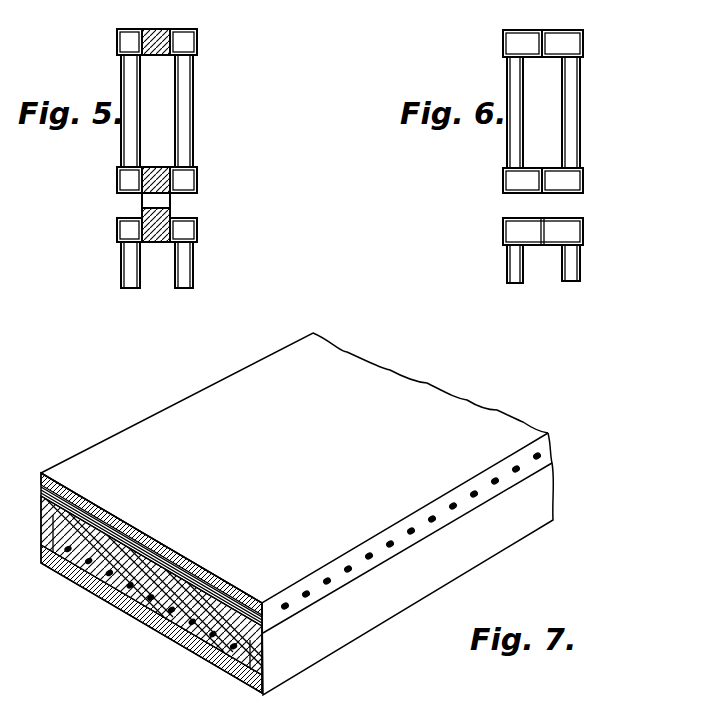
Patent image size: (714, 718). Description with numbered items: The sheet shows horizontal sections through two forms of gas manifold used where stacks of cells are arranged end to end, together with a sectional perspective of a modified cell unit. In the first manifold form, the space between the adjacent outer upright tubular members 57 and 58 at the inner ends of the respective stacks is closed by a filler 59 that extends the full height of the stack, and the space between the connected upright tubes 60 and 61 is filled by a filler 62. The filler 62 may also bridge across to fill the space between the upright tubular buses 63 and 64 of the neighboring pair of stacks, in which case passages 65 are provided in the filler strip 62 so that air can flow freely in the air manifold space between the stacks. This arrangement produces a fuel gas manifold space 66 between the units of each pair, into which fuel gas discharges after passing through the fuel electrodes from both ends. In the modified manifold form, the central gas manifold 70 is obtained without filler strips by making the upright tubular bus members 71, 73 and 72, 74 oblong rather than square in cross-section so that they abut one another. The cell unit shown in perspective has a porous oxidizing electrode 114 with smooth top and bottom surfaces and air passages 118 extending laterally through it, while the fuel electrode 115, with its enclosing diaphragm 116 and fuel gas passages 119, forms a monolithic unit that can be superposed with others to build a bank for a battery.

In FIG. 5, the outer upright tubular member 57 is at (117, 33).
In FIG. 5, the outer upright tubular member 58 is at (197, 34).
In FIG. 5, the filler 59 is at (164, 30).
In FIG. 5, the fuel gas manifold space 66 is at (163, 115).
In FIG. 5, the upright tube 60 is at (117, 182).
In FIG. 5, the upright tube 61 is at (197, 182).
In FIG. 5, the filler 62 is at (172, 169).
In FIG. 5, the passages 65 is at (170, 203).
In FIG. 5, the upright tubular bus 63 is at (117, 237).
In FIG. 5, the upright tubular bus 64 is at (197, 237).
In FIG. 6, the upright tubular bus member 71 is at (503, 43).
In FIG. 6, the upright tubular bus member 73 is at (583, 44).
In FIG. 6, the central gas manifold 70 is at (550, 113).
In FIG. 6, the upright tubular bus member 72 is at (513, 194).
In FIG. 6, the upright tubular bus member 74 is at (578, 193).
In FIG. 7, the porous oxidizing electrode 114 is at (145, 428).
In FIG. 7, the fuel electrode 115 is at (137, 600).
In FIG. 7, the enclosing diaphragm 116 is at (174, 640).
In FIG. 7, the air passages 118 is at (409, 530).
In FIG. 7, the fuel gas passages 119 is at (88, 564).